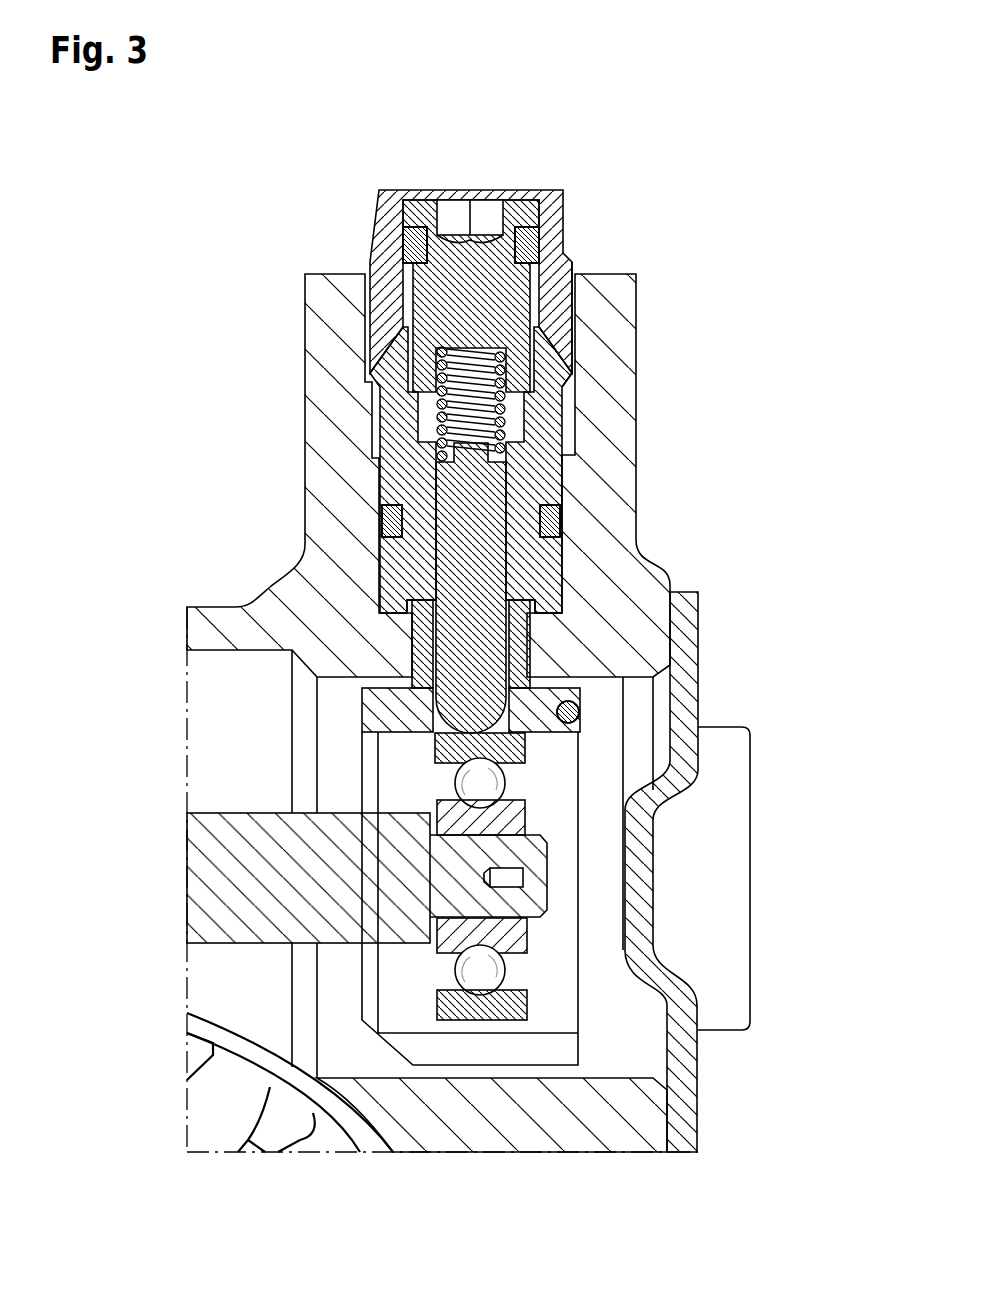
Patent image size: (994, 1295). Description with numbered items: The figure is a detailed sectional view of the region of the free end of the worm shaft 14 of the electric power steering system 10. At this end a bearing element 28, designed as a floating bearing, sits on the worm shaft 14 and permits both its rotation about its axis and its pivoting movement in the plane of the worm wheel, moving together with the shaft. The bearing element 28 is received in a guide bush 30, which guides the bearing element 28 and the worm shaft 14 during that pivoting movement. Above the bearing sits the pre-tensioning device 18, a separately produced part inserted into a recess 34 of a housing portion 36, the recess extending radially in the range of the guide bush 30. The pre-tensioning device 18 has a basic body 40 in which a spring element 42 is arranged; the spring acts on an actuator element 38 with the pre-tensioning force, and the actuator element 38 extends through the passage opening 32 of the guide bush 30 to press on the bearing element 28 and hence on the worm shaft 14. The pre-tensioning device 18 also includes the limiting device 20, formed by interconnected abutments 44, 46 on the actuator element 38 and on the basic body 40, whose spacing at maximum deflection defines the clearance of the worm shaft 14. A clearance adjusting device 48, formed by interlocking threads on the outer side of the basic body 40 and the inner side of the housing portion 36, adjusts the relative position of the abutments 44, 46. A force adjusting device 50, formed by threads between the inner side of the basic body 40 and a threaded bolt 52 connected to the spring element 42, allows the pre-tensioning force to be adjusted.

The electric power steering system 10 is at (181, 220).
The worm shaft 14 is at (235, 860).
The pre-tensioning device 18 is at (578, 246).
The limiting device 20 is at (401, 582).
The bearing element 28 is at (517, 818).
The guide bush 30 is at (537, 708).
The passage opening 32 is at (424, 698).
The recess 34 is at (566, 394).
The housing portion 36 is at (620, 347).
The actuator element 38 is at (484, 487).
The basic body 40 is at (390, 222).
The spring element 42 is at (437, 419).
The abutment 44 is at (523, 605).
The abutment 46 is at (548, 588).
The clearance adjusting device 48 is at (383, 523).
The force adjusting device 50 is at (537, 243).
The threaded bolt 52 is at (475, 307).